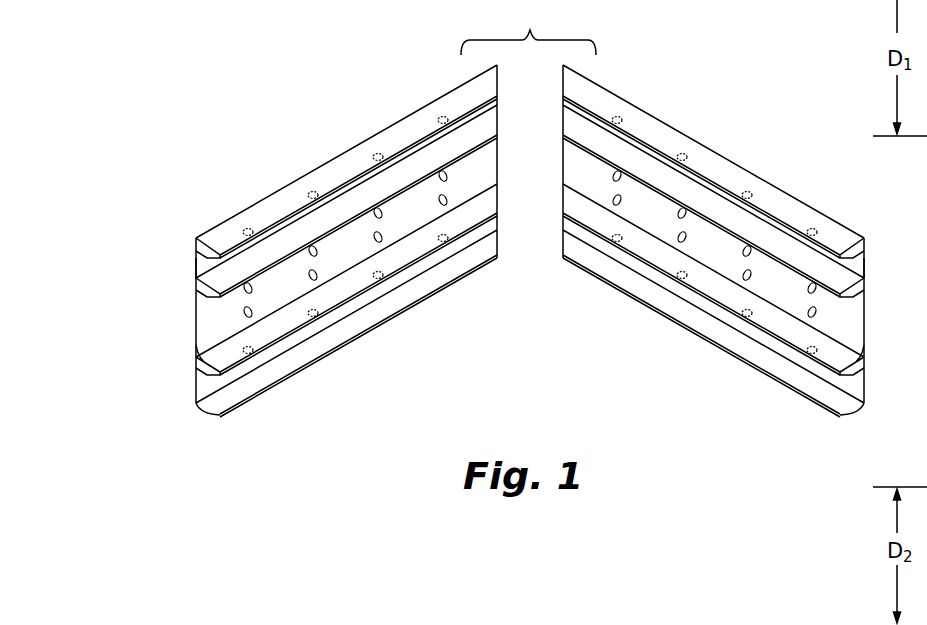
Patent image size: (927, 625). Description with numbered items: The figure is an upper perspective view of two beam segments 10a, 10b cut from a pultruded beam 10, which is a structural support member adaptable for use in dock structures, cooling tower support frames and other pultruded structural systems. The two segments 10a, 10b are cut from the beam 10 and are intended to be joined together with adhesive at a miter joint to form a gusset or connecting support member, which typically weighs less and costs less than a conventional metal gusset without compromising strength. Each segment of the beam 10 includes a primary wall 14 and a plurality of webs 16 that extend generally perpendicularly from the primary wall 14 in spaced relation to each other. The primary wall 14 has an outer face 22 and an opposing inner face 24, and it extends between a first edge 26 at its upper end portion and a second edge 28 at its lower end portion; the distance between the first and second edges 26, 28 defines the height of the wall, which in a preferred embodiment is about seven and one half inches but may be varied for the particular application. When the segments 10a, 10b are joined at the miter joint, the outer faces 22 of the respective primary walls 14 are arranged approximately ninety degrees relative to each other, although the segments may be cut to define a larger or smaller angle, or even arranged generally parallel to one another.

The pultruded beam 10 is at (531, 254).
The first beam segment 10a is at (340, 129).
The second beam segment 10b is at (725, 129).
The primary wall 14 is at (187, 327).
The web 16 is at (213, 259).
The outer face 22 is at (195, 252).
The inner face 24 is at (485, 160).
The first edge 26 is at (196, 237).
The second edge 28 is at (196, 403).